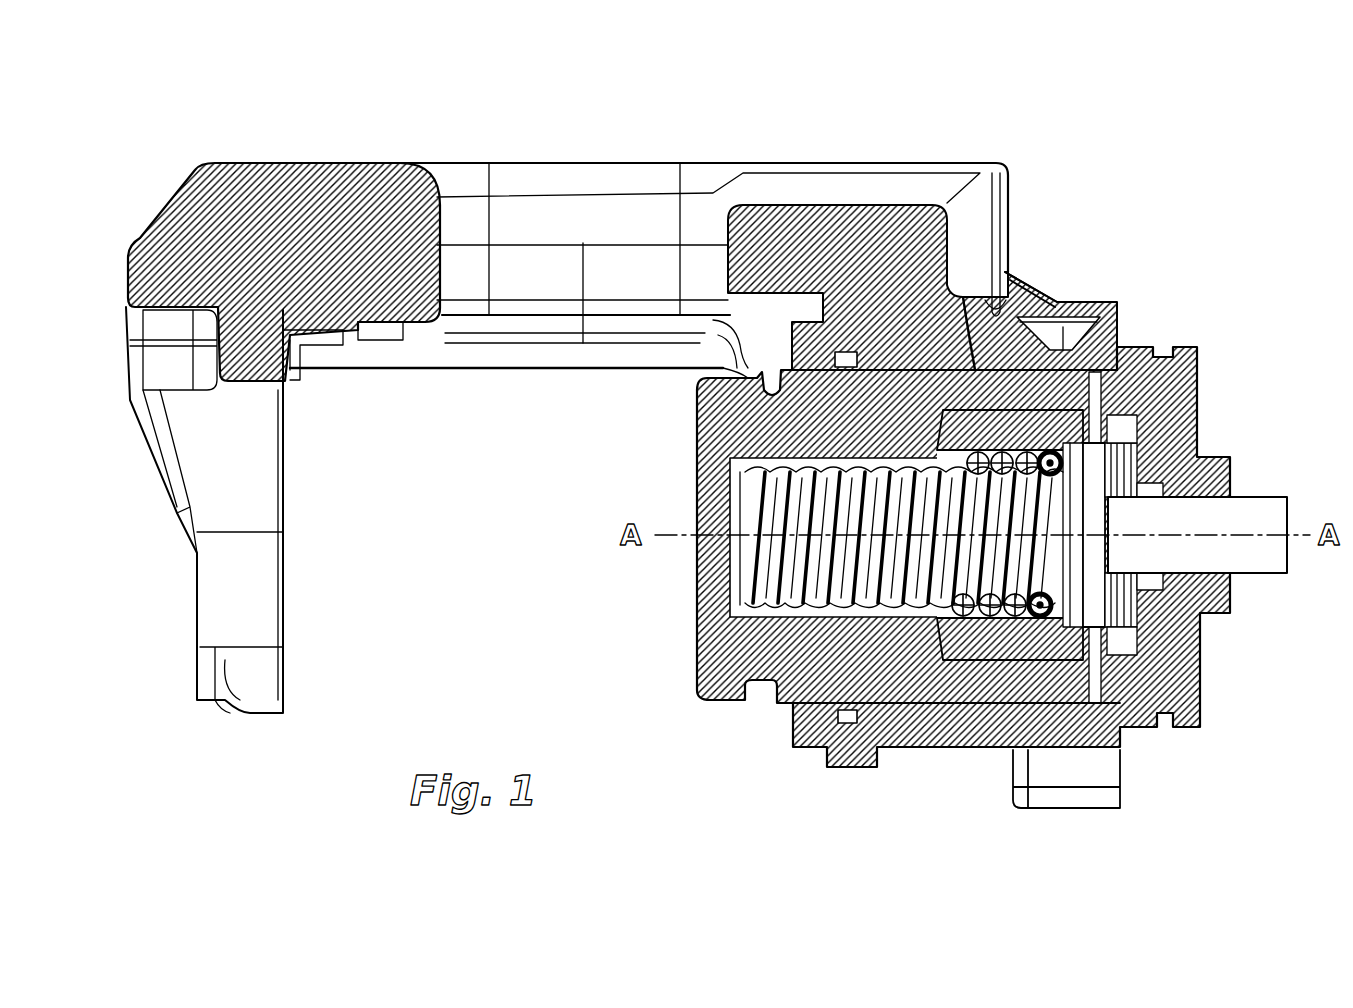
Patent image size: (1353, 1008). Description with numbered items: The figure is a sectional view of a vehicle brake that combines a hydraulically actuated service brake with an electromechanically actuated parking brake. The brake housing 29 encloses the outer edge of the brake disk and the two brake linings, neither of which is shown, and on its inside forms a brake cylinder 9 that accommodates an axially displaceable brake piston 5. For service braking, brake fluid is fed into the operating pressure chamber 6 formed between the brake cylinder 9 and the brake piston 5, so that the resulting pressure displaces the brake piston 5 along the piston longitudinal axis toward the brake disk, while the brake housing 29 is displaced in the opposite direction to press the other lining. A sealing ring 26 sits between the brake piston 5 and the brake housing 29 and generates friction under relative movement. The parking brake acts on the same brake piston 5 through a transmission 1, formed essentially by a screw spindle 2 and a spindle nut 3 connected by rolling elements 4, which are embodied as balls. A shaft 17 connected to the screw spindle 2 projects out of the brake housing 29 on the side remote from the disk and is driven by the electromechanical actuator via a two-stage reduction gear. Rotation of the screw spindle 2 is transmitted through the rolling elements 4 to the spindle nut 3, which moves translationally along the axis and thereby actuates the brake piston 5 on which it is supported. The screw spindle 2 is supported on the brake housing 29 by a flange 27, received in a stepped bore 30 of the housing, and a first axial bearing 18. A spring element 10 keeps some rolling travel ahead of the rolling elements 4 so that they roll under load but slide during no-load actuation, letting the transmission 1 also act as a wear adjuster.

The transmission 1 is at (925, 621).
The screw spindle 2 is at (760, 545).
The spindle nut 3 is at (1035, 640).
The rolling elements 4 is at (988, 620).
The brake piston 5 is at (742, 655).
The operating pressure chamber 6 is at (1095, 387).
The brake cylinder 9 is at (943, 693).
The spring element 10 is at (1058, 450).
The shaft 17 is at (1240, 550).
The first axial bearing 18 is at (1124, 628).
The sealing ring 26 is at (848, 353).
The flange 27 is at (1095, 470).
The brake housing 29 is at (332, 187).
The stepped bore 30 is at (1140, 422).